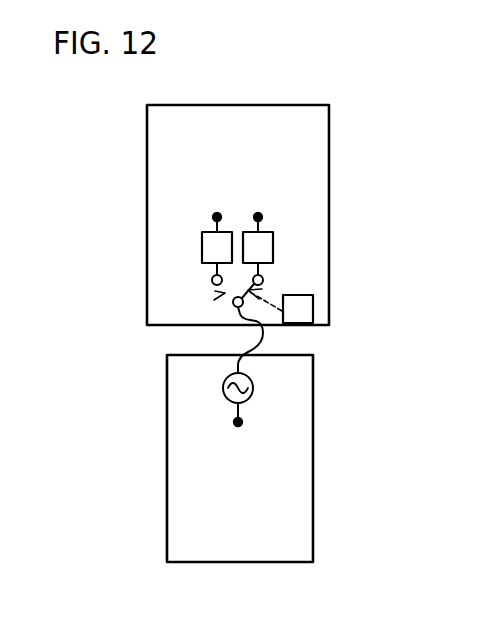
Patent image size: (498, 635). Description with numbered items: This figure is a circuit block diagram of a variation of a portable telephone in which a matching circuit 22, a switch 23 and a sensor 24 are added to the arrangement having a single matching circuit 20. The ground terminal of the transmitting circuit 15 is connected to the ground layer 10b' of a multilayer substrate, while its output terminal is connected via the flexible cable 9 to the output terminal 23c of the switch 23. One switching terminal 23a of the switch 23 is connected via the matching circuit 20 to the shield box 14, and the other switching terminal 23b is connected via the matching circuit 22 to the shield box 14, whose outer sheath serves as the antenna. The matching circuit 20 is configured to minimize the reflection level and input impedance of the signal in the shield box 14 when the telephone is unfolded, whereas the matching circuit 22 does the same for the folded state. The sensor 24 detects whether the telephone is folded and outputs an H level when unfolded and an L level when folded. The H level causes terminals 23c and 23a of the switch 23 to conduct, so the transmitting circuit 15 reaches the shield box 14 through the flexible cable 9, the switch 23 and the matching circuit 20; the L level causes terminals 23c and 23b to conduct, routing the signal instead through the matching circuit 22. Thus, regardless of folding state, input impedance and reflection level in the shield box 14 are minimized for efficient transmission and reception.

The shield box 14 is at (330, 183).
The ground layer 10b' is at (281, 458).
The matching circuit 22 is at (213, 248).
The matching circuit 20 is at (262, 248).
The switch 23 is at (225, 293).
The switching terminal 23a is at (263, 280).
The switching terminal 23b is at (212, 280).
The output terminal 23c is at (233, 306).
The sensor 24 is at (298, 310).
The flexible cable 9 is at (263, 334).
The transmitting circuit 15 is at (253, 386).